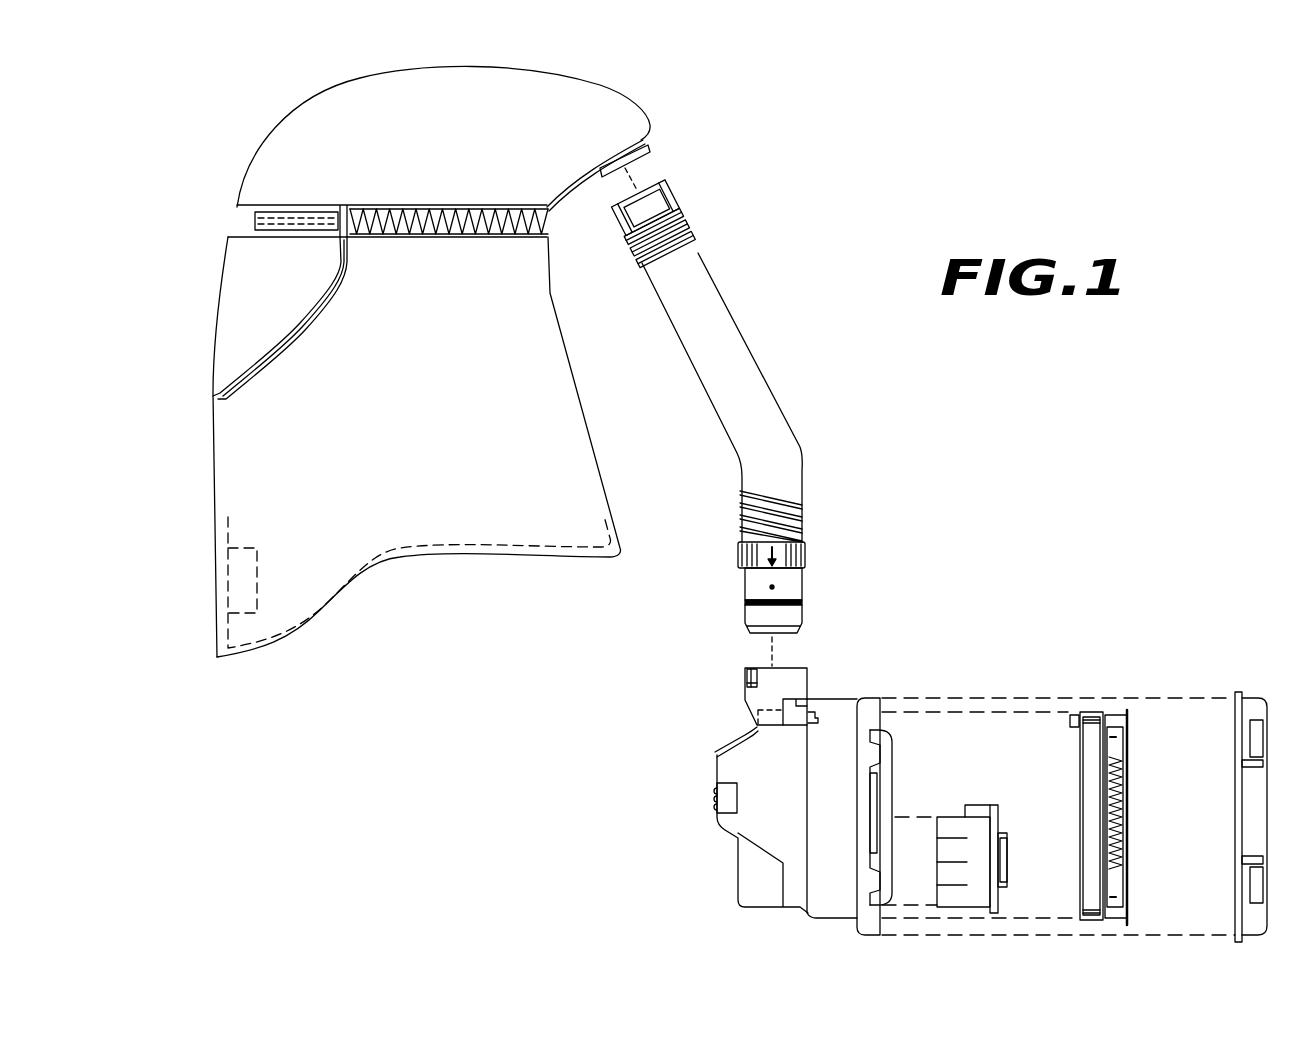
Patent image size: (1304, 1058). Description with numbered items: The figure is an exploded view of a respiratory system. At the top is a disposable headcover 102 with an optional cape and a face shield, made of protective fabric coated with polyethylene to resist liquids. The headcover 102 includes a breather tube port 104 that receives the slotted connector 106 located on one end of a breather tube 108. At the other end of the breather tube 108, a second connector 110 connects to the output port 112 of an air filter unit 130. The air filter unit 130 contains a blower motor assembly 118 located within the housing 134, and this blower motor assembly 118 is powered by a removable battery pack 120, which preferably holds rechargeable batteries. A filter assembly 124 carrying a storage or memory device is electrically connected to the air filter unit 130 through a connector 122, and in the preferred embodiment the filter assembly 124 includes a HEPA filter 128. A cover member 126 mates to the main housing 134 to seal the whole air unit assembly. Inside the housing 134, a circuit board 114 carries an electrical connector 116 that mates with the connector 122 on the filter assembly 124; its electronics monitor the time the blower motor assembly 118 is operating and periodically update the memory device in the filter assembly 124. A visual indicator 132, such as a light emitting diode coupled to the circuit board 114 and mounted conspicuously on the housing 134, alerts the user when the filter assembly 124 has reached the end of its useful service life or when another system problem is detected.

The disposable headcover 102 is at (400, 557).
The breather tube port 104 is at (643, 140).
The slotted connector 106 is at (675, 190).
The breather tube 108 is at (800, 443).
The second connector 110 is at (805, 585).
The output port 112 is at (747, 678).
The circuit board 114 is at (800, 705).
The electrical connector 116 is at (817, 720).
The blower motor assembly 118 is at (892, 780).
The battery pack 120 is at (993, 803).
The connector 122 is at (1073, 715).
The filter assembly 124 is at (1112, 712).
The cover member 126 is at (1252, 693).
The HEPA filter 128 is at (1115, 748).
The air filter unit 130 is at (737, 883).
The visual indicator 132 is at (715, 752).
The housing 134 is at (717, 775).